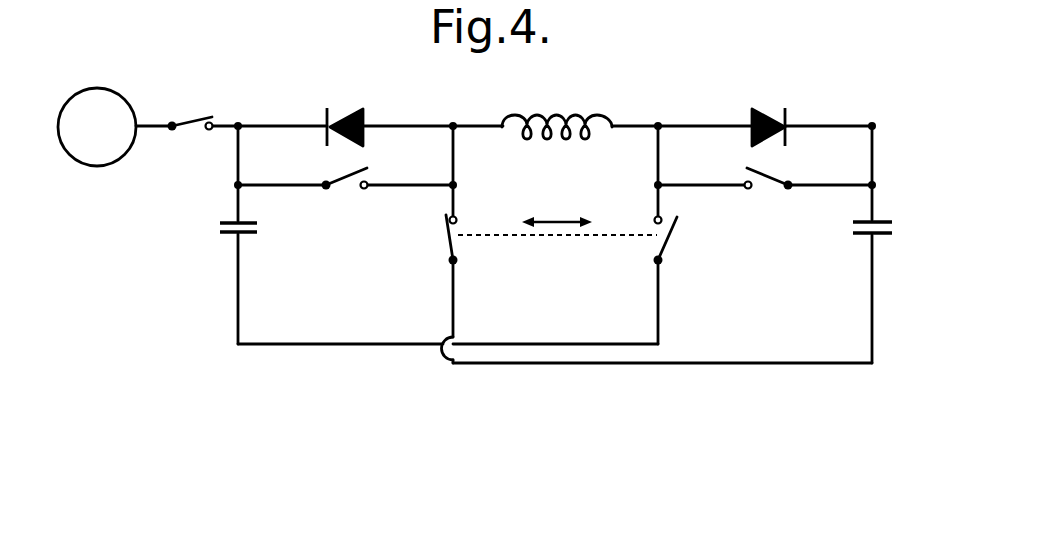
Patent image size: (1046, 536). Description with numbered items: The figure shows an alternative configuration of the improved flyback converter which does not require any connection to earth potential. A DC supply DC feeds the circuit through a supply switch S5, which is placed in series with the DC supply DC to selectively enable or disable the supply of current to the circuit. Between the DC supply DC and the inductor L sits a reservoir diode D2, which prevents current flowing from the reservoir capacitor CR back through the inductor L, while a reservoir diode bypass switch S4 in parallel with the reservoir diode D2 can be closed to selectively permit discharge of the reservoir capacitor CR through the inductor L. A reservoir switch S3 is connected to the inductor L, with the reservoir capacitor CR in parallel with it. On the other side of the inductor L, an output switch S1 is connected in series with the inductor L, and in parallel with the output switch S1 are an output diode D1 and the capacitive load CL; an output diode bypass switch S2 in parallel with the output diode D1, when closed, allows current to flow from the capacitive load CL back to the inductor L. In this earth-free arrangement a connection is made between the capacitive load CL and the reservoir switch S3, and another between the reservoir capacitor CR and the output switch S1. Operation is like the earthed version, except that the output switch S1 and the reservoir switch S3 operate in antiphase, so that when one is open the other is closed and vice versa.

The DC supply DC is at (97, 127).
The supply switch S5 is at (190, 148).
The reservoir diode D2 is at (346, 105).
The reservoir diode bypass switch S4 is at (345, 205).
The reservoir capacitor CR is at (213, 226).
The reservoir switch S3 is at (435, 240).
The inductor L is at (557, 106).
The output switch S1 is at (684, 241).
The output diode D1 is at (770, 105).
The output diode bypass switch S2 is at (769, 205).
The capacitive load CL is at (892, 228).